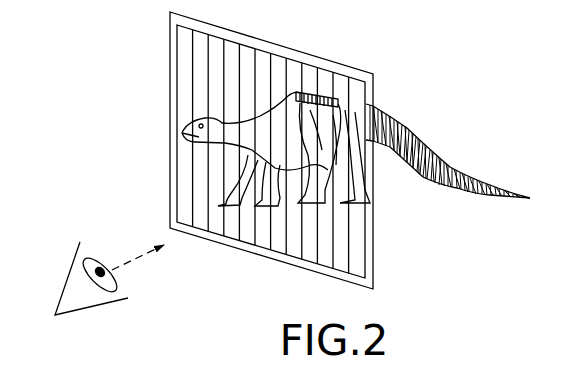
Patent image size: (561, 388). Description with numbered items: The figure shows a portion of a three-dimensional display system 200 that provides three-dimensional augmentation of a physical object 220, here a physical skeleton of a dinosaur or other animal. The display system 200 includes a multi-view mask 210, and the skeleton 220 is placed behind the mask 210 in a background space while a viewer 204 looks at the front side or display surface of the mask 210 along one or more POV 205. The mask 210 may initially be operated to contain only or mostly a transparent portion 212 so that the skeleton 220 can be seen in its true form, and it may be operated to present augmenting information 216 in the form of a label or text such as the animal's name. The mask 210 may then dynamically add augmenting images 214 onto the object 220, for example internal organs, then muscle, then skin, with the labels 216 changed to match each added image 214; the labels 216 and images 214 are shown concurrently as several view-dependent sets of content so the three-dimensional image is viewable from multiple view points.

The 3D display system 200 is at (85, 59).
The viewer 204 is at (62, 283).
The POV 205 is at (133, 258).
The multi-view mask 210 is at (164, 43).
The transparent portion 212 is at (358, 236).
The augmenting images 214 is at (232, 205).
The augmenting information 216 is at (214, 70).
The physical object 220 is at (458, 165).